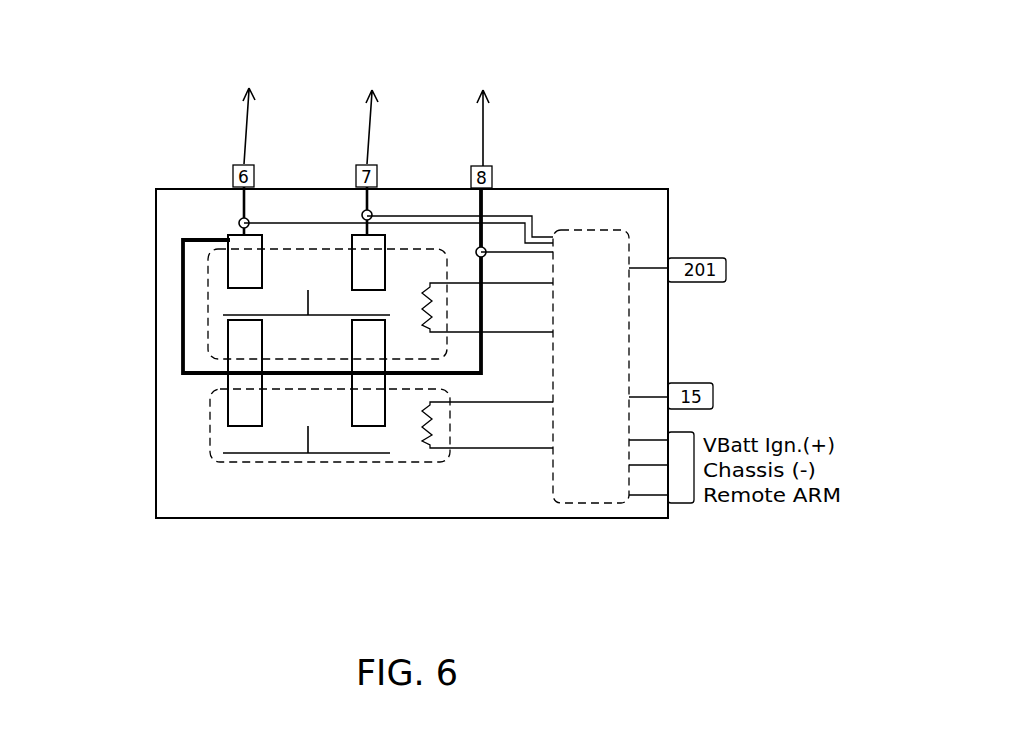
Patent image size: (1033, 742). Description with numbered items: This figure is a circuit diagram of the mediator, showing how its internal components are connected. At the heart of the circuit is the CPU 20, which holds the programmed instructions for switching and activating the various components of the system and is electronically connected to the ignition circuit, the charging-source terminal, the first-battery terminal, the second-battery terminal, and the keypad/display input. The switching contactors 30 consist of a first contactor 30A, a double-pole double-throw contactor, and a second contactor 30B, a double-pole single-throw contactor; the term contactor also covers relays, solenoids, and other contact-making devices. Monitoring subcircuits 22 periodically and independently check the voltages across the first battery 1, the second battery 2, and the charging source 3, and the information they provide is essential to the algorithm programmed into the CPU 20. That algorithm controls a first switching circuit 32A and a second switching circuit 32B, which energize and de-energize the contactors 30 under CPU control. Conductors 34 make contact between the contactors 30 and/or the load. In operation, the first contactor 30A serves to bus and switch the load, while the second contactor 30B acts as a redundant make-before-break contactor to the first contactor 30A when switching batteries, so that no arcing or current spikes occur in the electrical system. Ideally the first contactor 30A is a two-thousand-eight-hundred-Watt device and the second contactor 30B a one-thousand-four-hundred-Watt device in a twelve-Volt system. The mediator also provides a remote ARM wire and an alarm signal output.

The first battery 1 is at (377, 111).
The second battery 2 is at (488, 109).
The charging source 3 is at (254, 105).
The CPU 20 is at (607, 263).
The monitoring subcircuits 22 is at (541, 249).
The switching contactors 30 is at (249, 388).
The first contactor 30A is at (218, 291).
The second contactor 30B is at (215, 447).
The first switching circuit 32A is at (507, 433).
The second switching circuit 32B is at (520, 305).
The conductors 34 is at (195, 240).